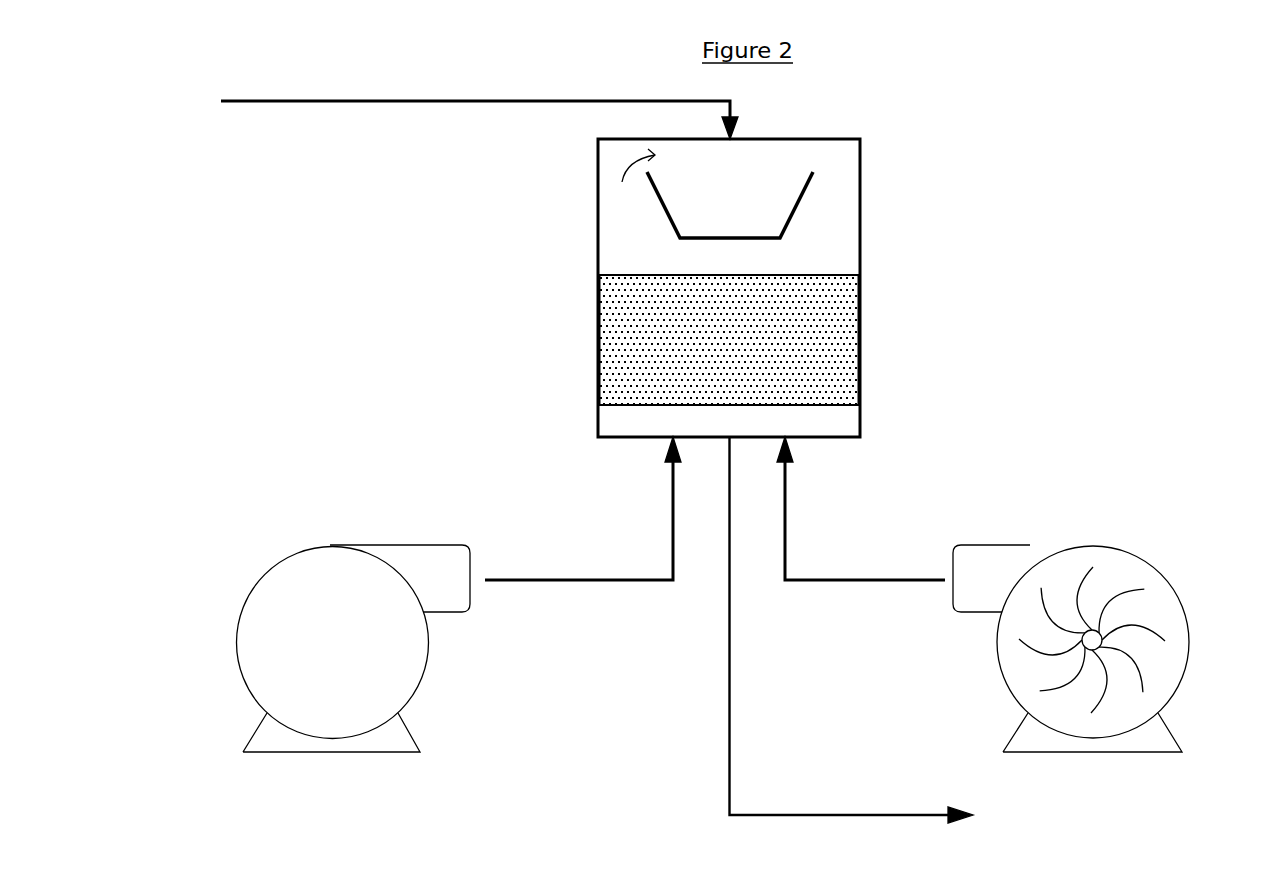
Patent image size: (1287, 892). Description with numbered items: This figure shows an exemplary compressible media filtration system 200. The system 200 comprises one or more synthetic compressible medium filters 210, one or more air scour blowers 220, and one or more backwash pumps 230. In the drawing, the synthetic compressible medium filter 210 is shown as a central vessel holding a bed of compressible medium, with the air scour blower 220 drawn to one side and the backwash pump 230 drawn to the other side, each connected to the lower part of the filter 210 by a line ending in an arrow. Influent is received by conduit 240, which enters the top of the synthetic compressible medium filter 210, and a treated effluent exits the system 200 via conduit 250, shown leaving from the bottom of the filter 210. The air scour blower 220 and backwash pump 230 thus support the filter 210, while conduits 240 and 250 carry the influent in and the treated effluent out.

The system 200 is at (1032, 107).
The synthetic compressible medium filter 210 is at (590, 255).
The air scour blower 220 is at (988, 651).
The backwash pump 230 is at (436, 666).
The conduit 240 is at (457, 114).
The conduit 250 is at (876, 632).